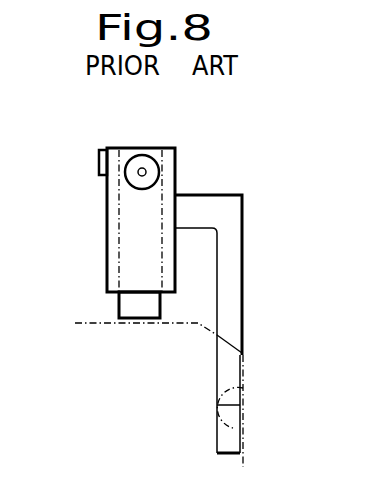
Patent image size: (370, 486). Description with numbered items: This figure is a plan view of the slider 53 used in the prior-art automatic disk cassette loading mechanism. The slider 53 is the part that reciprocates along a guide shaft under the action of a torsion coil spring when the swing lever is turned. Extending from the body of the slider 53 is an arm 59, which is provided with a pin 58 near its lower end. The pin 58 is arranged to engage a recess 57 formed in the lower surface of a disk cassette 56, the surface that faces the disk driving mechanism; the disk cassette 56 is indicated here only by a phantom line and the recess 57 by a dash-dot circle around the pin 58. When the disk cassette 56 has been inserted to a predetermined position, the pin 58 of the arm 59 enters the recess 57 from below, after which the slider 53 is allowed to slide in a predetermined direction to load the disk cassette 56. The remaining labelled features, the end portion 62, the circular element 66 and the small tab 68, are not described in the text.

The slider 53 is at (98, 143).
The disk cassette 56 is at (90, 323).
The recess 57 is at (210, 405).
The pin 58 is at (233, 395).
The arm 59 is at (233, 292).
The arm end 62 is at (230, 442).
The pin 66 is at (146, 172).
The stopper tab 68 is at (99, 157).